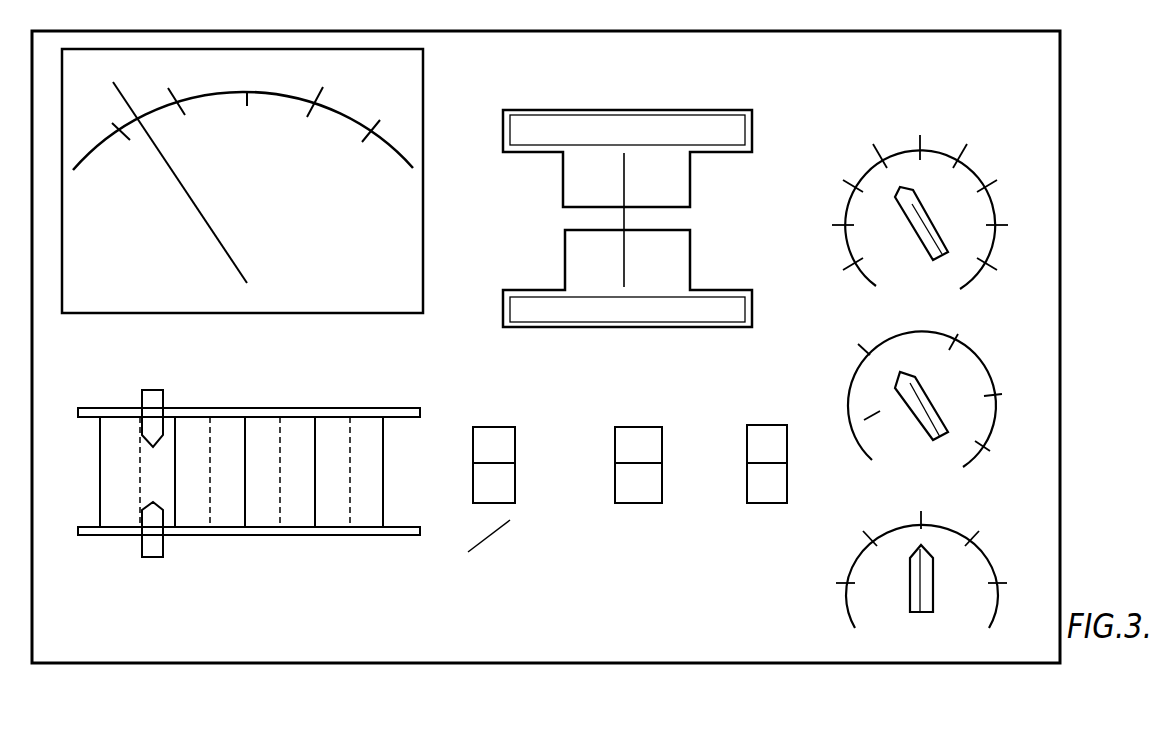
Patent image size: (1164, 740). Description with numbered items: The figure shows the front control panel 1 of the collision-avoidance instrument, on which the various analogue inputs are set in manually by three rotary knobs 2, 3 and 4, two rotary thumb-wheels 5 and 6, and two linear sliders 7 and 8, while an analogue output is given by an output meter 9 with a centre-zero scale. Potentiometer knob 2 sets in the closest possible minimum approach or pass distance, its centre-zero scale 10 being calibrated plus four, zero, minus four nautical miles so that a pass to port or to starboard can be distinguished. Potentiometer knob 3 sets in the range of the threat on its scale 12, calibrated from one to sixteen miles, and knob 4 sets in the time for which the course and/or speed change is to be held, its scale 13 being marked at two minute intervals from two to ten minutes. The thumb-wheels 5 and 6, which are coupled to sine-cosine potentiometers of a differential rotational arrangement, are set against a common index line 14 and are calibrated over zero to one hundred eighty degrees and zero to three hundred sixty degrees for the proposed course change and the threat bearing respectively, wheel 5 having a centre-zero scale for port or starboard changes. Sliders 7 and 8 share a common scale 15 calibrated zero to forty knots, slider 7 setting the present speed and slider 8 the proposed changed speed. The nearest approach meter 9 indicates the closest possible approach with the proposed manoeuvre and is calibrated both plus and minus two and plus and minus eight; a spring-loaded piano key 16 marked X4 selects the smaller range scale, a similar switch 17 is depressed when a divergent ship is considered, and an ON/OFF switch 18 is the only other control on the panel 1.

The front control panel 1 is at (1058, 318).
The potentiometer knob 2 is at (918, 210).
The potentiometer knob 3 is at (923, 400).
The knob 4 is at (933, 583).
The thumb-wheel 5 is at (558, 128).
The thumb-wheel 6 is at (703, 305).
The slider 7 is at (145, 406).
The slider 8 is at (146, 542).
The output meter 9 is at (401, 66).
The centre-zero scale 10 is at (972, 168).
The scale 12 is at (982, 363).
The scale 13 is at (990, 560).
The common index line 14 is at (628, 218).
The common scale 15 is at (108, 452).
The spring-loaded piano key 16 is at (762, 480).
The switch 17 is at (628, 482).
The ON/OFF switch 18 is at (500, 449).